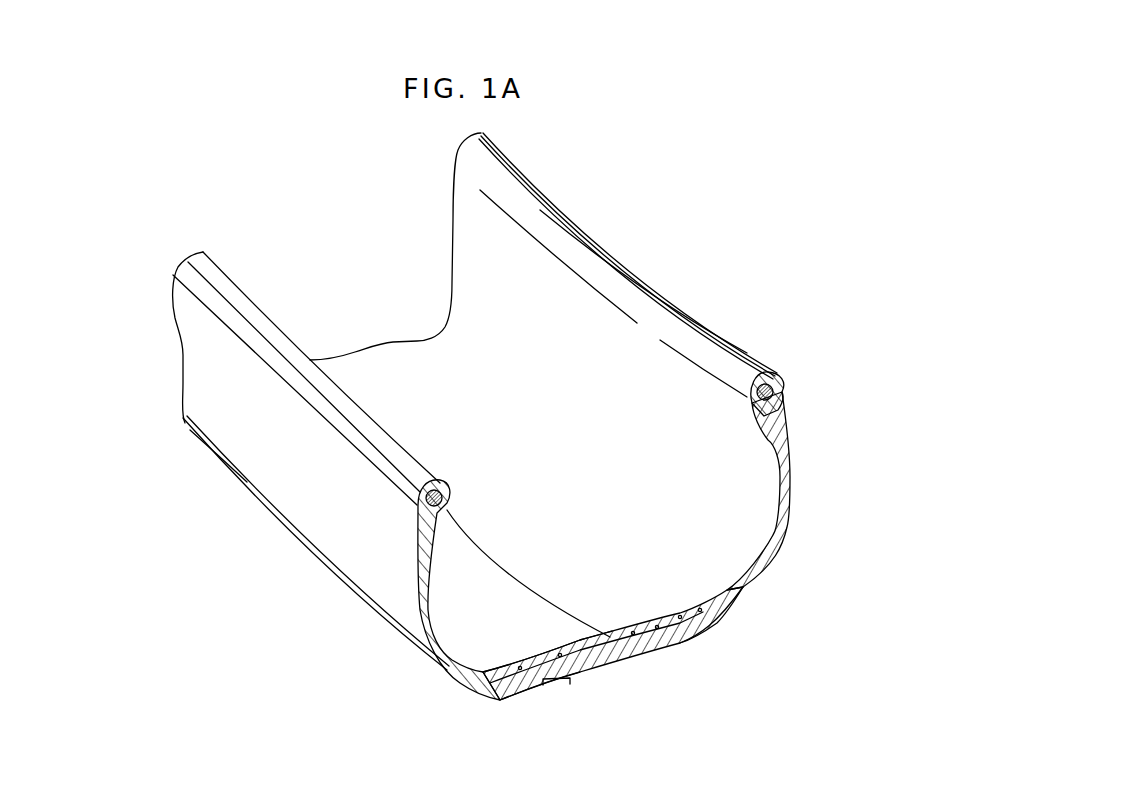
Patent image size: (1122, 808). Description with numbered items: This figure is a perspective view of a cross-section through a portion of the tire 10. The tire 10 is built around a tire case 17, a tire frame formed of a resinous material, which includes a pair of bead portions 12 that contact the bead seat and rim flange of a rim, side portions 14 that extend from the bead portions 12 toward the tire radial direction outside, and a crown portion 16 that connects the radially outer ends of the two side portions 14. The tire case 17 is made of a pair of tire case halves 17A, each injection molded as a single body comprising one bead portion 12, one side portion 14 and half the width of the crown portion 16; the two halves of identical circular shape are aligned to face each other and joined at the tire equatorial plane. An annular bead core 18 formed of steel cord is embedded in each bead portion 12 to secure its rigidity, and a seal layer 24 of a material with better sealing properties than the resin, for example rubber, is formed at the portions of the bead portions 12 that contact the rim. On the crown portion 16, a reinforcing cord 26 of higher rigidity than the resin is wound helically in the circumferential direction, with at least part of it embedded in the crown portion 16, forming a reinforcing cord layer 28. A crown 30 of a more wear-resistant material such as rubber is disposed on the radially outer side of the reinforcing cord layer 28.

The tire 10 is at (661, 231).
The bead portions 12 is at (414, 454).
The side portions 14 is at (376, 567).
The crown portion 16 is at (683, 643).
The tire case 17 is at (595, 531).
The tire case halves 17A is at (504, 583).
The bead core 18 is at (448, 498).
The seal layer 24 is at (368, 452).
The reinforcing cord 26 is at (545, 688).
The reinforcing cord layer 28 is at (592, 676).
The crown 30 is at (722, 629).